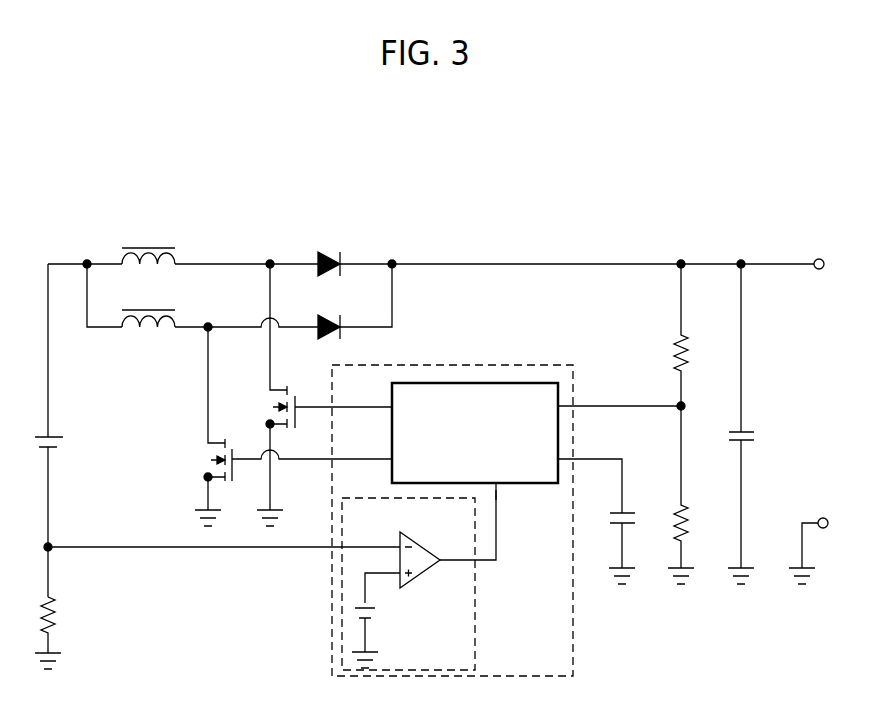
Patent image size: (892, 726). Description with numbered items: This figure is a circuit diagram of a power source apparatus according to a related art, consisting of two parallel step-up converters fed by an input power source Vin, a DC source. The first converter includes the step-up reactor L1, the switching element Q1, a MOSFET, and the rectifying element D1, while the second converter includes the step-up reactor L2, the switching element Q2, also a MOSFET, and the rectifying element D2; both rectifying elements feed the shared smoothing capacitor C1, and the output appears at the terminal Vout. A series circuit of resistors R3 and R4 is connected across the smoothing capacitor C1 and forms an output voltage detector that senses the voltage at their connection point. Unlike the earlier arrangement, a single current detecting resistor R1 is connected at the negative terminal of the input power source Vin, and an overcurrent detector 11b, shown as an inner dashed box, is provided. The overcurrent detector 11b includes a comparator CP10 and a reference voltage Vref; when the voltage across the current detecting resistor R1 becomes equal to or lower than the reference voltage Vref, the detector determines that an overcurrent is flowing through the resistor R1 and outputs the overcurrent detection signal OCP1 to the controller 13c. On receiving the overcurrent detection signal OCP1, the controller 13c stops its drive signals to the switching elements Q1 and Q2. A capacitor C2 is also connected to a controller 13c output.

The controller 13c is at (506, 382).
The overcurrent detector 11b is at (299, 584).
The step-up reactor L1 is at (148, 244).
The step-up reactor L2 is at (148, 306).
The rectifying element D1 is at (332, 250).
The rectifying element D2 is at (332, 313).
The switching element Q1 is at (314, 395).
The switching element Q2 is at (282, 426).
The current detecting resistor R1 is at (62, 633).
The resistor R3 is at (698, 335).
The resistor R4 is at (696, 495).
The smoothing capacitor C1 is at (756, 424).
The capacitor C2 is at (596, 521).
The comparator CP10 is at (426, 546).
The input power source Vin is at (68, 439).
The reference voltage Vref is at (389, 620).
The output terminal Vout is at (816, 277).
The overcurrent detection signal OCP1 is at (525, 509).